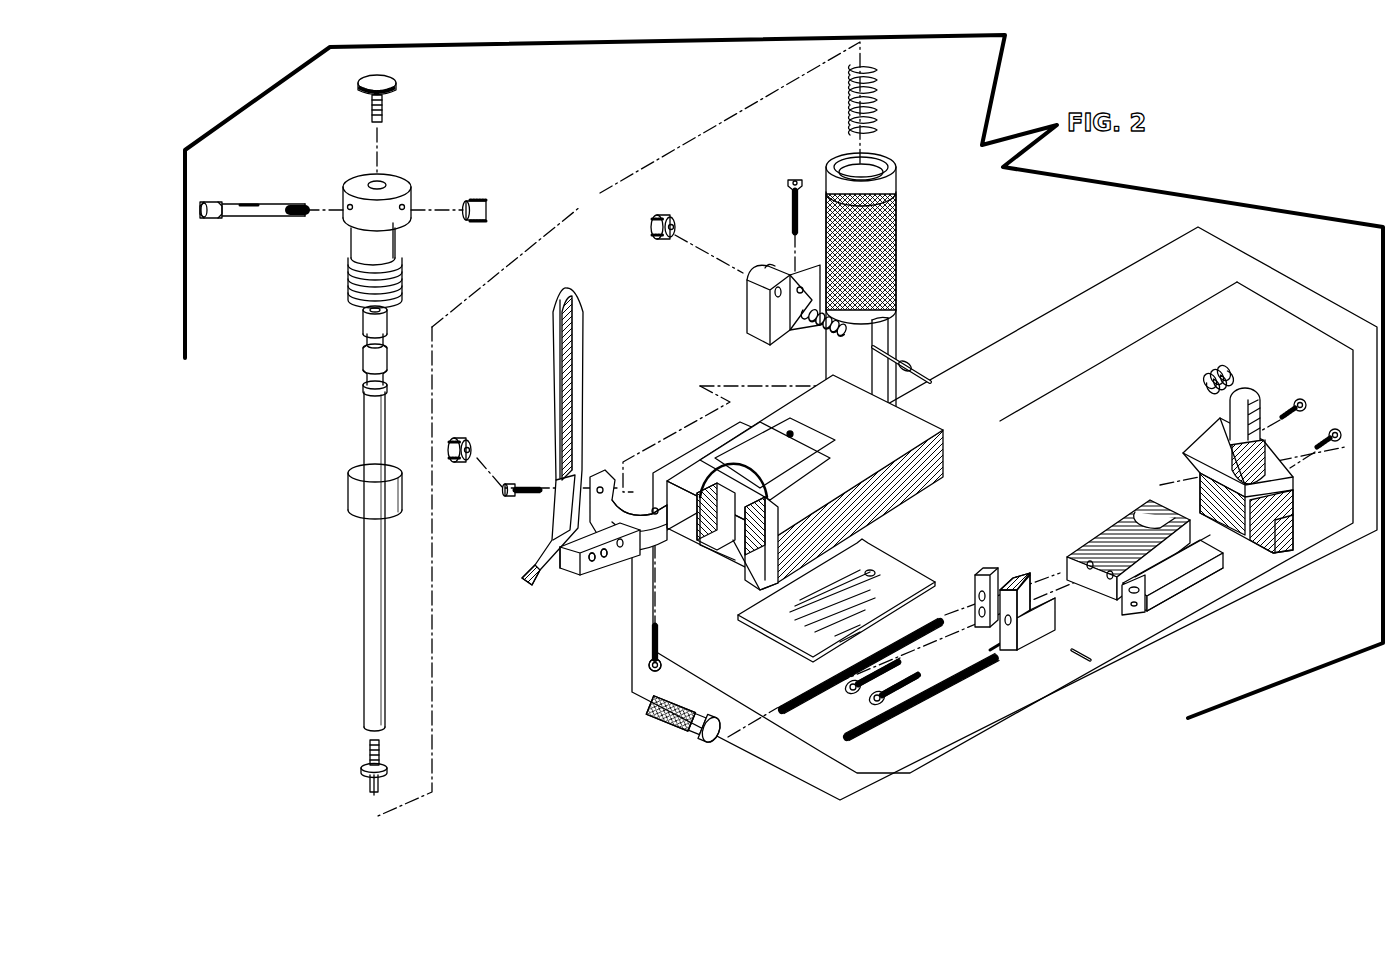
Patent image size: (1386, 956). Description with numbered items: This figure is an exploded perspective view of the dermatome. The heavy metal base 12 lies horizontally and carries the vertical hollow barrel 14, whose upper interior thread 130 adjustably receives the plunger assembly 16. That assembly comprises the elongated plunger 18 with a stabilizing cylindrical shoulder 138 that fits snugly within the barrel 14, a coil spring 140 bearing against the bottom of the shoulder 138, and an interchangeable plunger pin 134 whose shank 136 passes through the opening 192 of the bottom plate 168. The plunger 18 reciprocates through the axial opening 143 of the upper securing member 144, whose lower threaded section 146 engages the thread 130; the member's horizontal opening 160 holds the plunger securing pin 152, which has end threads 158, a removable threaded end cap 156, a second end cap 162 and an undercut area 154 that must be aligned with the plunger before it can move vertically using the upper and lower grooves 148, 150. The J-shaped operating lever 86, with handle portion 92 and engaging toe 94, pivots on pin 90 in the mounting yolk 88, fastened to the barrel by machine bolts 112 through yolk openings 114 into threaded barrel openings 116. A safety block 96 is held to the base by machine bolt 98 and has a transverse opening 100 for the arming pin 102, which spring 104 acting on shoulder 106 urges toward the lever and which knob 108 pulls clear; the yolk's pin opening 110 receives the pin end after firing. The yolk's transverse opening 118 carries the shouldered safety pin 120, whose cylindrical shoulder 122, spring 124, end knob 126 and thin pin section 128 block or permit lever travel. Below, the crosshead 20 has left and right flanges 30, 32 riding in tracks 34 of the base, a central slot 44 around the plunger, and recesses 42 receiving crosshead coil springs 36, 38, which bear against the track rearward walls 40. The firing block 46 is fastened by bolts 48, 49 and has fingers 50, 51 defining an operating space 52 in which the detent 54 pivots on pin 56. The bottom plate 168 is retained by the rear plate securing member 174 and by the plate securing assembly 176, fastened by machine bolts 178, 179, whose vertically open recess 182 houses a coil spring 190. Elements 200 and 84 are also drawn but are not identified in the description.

The thumb screw 200 is at (394, 86).
The axial opening 143 is at (385, 184).
The upper securing member 144 is at (428, 201).
The interiorly threaded end cap 156 is at (488, 210).
The horizontal opening 160 is at (405, 209).
The second end cap 162 is at (212, 202).
The plunger securing pin 152 is at (273, 198).
The end threads 158 is at (300, 204).
The undercut area 154 is at (246, 216).
The lower threaded section 146 is at (348, 275).
The plunger assembly 16 is at (352, 324).
The upper groove 148 is at (365, 340).
The lower groove 150 is at (366, 388).
The stabilizing cylindrical shoulder 138 is at (352, 492).
The plunger 18 is at (364, 550).
The plunger pin 134 is at (368, 755).
The shank 136 is at (370, 786).
The handle portion 92 is at (552, 446).
The operating lever 86 is at (583, 405).
The engaging portion 94 is at (522, 582).
The cylindrical shoulder 122 is at (458, 440).
The machine bolts 112 is at (513, 484).
The mounting yolk 88 is at (607, 560).
The yolk openings 114 is at (657, 514).
The pivot pin 90 is at (580, 578).
The pin opening 110 is at (592, 562).
The transverse opening 118 is at (608, 558).
The safety pin 120 is at (650, 750).
The spring 124 is at (651, 736).
The end knob 126 is at (688, 752).
The elongated pin section 128 is at (650, 700).
The coil spring 140 is at (878, 100).
The barrel 14 is at (899, 288).
The upper interior thread 130 is at (880, 168).
The shoulder 106 is at (892, 336).
The machine bolt 98 is at (790, 180).
The transverse opening 100 is at (787, 283).
The knob 108 is at (662, 217).
The safety block 96 is at (759, 250).
The spring 104 is at (825, 334).
The arming pin 102 is at (932, 383).
The threaded barrel openings 116 is at (870, 397).
The base 12 is at (945, 477).
The tracks 34 is at (705, 470).
The track rearward walls 40 is at (745, 560).
The rear plate securing member 174 is at (747, 570).
The bottom plate 168 is at (844, 586).
The plate opening 192 is at (873, 572).
The crosshead coil spring 36 is at (790, 705).
The bolt 48 is at (848, 692).
The bolt 49 is at (873, 702).
The crosshead coil spring 38 is at (912, 695).
The detent 54 is at (987, 655).
The pin 56 is at (1072, 652).
The vertical finger 50 is at (985, 570).
The firing block 46 is at (1036, 574).
The detent operating space 52 is at (1012, 580).
The vertical finger 51 is at (1030, 575).
The left flange 30 is at (1128, 528).
The central slot 44 is at (1152, 514).
The crosshead 20 is at (1152, 603).
The crosshead recesses 42 is at (1122, 598).
The right flange 32 is at (1218, 548).
The plate securing assembly 176 is at (1241, 445).
The vertically open recess 182 is at (1212, 430).
The post 84 is at (1258, 398).
The coil spring 190 is at (1206, 373).
The machine bolt 178 is at (1297, 400).
The machine bolt 179 is at (1336, 430).